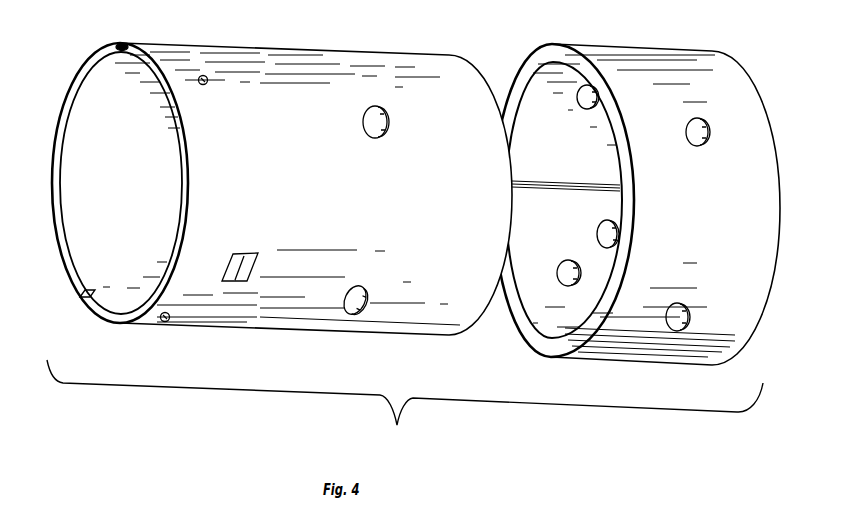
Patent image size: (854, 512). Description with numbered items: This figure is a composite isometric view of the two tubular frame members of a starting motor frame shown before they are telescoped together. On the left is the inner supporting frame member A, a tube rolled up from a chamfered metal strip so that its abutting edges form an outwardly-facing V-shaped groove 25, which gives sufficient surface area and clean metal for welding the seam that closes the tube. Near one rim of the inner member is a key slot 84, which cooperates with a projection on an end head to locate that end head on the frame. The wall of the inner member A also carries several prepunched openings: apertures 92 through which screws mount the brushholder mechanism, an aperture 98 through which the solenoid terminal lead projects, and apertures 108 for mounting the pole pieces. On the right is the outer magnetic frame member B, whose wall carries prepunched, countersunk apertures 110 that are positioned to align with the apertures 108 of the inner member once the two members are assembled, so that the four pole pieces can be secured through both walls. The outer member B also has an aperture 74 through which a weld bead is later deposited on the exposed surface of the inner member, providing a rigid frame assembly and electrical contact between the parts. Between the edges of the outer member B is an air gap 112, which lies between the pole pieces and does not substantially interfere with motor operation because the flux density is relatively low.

The inner supporting frame member A is at (303, 48).
The outer magnetic frame member B is at (632, 53).
The V-shaped groove 25 is at (120, 44).
The aperture 74 is at (598, 228).
The key slot 84 is at (80, 296).
The prepunched apertures 92 is at (207, 85).
The prepunched aperture 98 is at (238, 252).
The prepunched apertures 108 is at (388, 122).
The prepunched apertures 110 is at (585, 110).
The air gap 112 is at (557, 180).